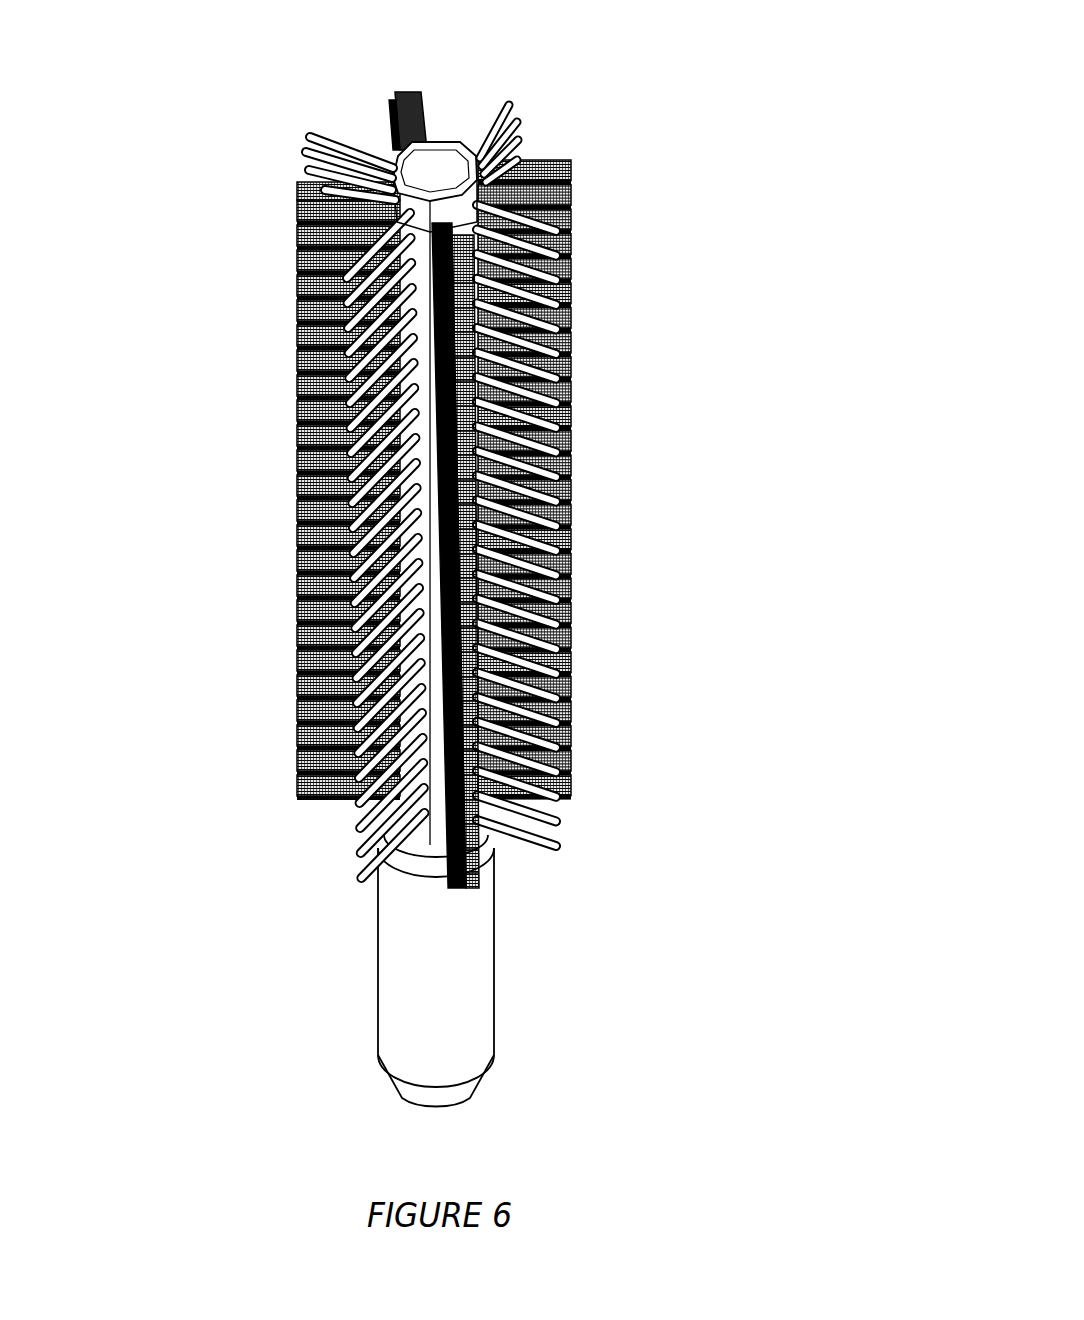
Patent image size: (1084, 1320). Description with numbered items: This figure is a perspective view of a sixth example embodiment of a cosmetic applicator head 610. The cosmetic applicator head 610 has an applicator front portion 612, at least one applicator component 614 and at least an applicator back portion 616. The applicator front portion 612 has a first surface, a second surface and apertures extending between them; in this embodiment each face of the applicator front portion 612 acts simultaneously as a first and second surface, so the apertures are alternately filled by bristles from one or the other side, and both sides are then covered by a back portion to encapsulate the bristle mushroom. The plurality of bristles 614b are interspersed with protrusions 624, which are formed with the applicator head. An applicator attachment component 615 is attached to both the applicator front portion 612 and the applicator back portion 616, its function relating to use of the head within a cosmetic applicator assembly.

The cosmetic applicator head 610 is at (630, 107).
The applicator front portion 612 is at (440, 152).
The applicator component 614 is at (588, 296).
The plurality of bristles 614b is at (573, 461).
The applicator attachment component 615 is at (488, 987).
The applicator back portion 616 is at (398, 170).
The protrusions 624 is at (335, 387).